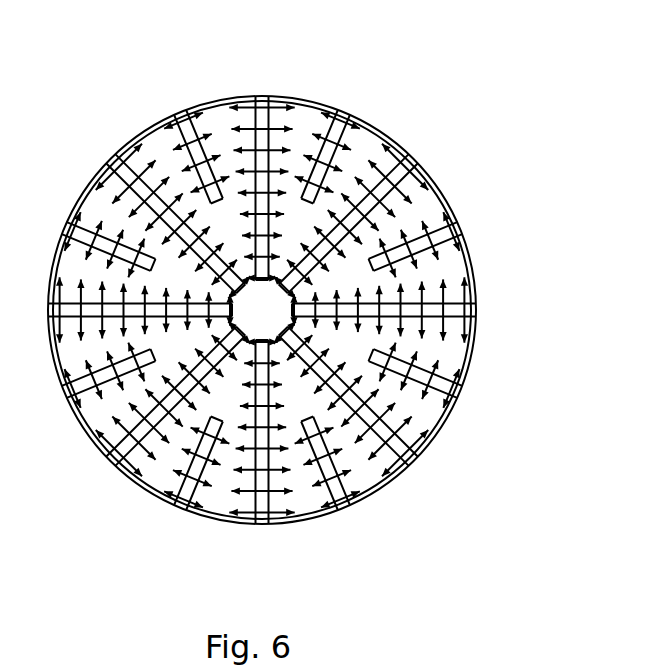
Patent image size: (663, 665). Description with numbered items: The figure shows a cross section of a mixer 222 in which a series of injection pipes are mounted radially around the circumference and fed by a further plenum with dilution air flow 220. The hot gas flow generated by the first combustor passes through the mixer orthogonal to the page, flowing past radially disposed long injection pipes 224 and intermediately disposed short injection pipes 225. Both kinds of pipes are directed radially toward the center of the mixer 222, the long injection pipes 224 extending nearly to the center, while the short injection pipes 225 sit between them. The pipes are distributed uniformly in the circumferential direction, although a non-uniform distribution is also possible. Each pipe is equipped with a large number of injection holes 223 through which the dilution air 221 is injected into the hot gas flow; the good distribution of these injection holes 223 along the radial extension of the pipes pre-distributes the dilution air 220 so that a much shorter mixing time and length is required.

The dilution air flow 220 is at (262, 80).
The dilution air 221 is at (105, 167).
The mixer 222 is at (315, 100).
The injection holes 223 is at (183, 510).
The long injection pipes 224 is at (262, 523).
The short injection pipes 225 is at (347, 510).